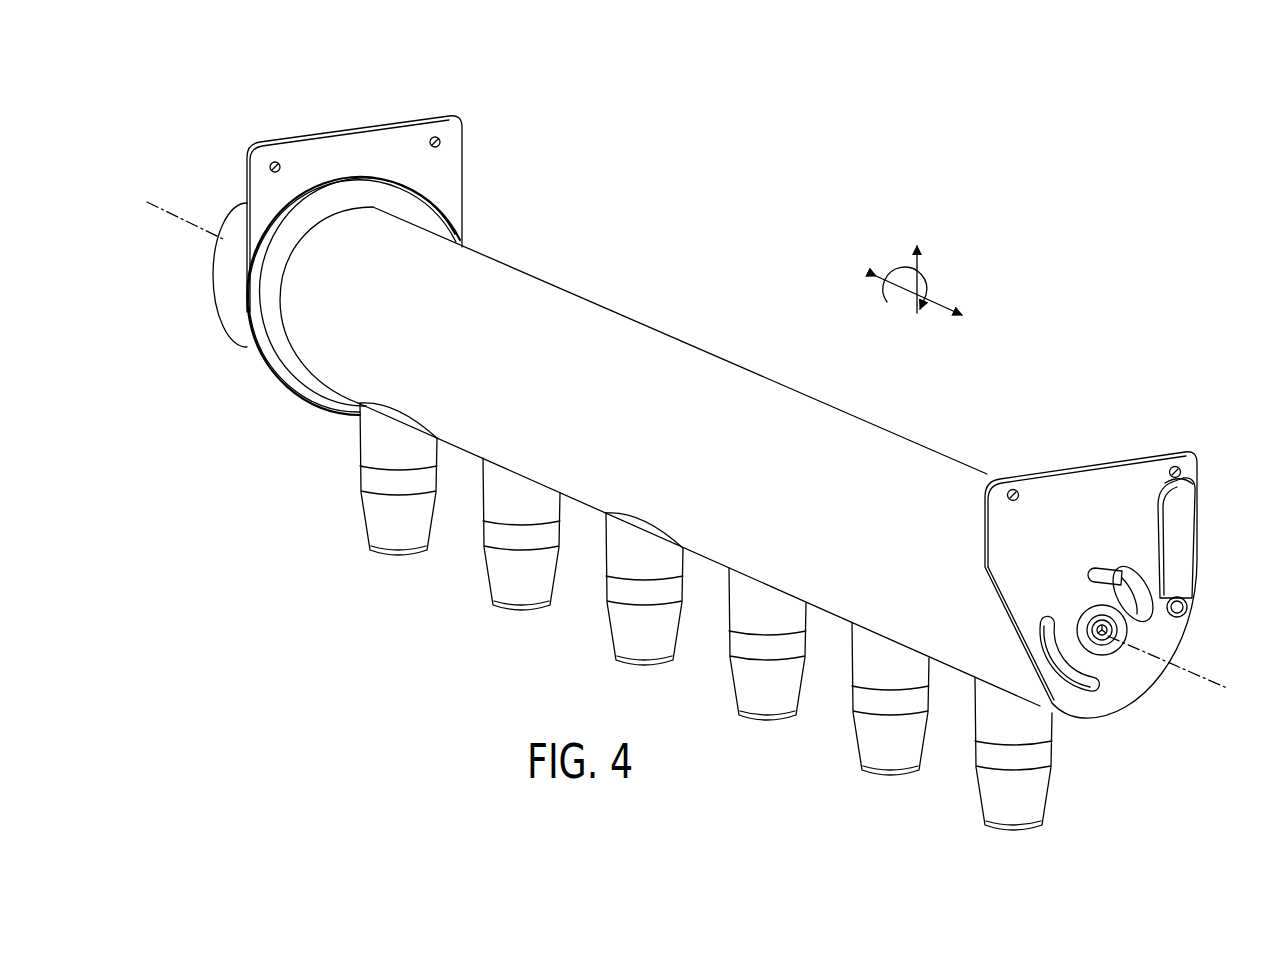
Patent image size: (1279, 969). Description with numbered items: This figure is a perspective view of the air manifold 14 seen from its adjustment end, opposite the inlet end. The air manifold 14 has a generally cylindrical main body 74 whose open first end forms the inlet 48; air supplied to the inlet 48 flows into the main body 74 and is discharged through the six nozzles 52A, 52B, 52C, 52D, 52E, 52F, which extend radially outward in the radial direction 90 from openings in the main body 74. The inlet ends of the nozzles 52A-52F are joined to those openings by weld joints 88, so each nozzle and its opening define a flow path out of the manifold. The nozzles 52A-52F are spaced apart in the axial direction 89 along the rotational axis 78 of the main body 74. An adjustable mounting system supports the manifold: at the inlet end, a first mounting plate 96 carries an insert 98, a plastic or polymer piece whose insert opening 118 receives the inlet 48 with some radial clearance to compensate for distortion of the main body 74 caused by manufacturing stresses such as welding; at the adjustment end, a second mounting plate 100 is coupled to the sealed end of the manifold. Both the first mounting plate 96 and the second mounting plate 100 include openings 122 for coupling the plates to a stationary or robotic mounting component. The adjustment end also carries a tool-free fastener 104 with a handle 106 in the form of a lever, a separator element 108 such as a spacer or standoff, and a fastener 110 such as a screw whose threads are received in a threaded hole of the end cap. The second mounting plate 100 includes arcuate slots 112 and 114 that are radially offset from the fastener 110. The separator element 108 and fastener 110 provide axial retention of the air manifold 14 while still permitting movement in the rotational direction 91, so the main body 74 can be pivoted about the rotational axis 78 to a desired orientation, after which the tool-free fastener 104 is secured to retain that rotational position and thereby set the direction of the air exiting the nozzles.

The air manifold 14 is at (746, 296).
The inlet 48 is at (223, 216).
The nozzle 52A is at (363, 514).
The nozzle 52B is at (488, 570).
The nozzle 52C is at (610, 625).
The nozzle 52D is at (733, 680).
The nozzle 52E is at (855, 738).
The nozzle 52F is at (978, 795).
The main body 74 is at (785, 396).
The rotational axis 78 is at (184, 224).
The weld joint 88 is at (372, 397).
The axial direction 89 is at (935, 306).
The radial direction 90 is at (921, 262).
The rotational direction 91 is at (905, 272).
The first mounting plate 96 is at (352, 129).
The insert 98 is at (448, 218).
The second mounting plate 100 is at (1090, 461).
The tool-free fastener 104 is at (1195, 483).
The handle 106 is at (1185, 544).
The separator element 108 is at (1078, 614).
The fastener 110 is at (1110, 640).
The arcuate slot 112 is at (1106, 568).
The arcuate slot 114 is at (1090, 698).
The insert opening 118 is at (337, 204).
The opening 122 is at (275, 161).